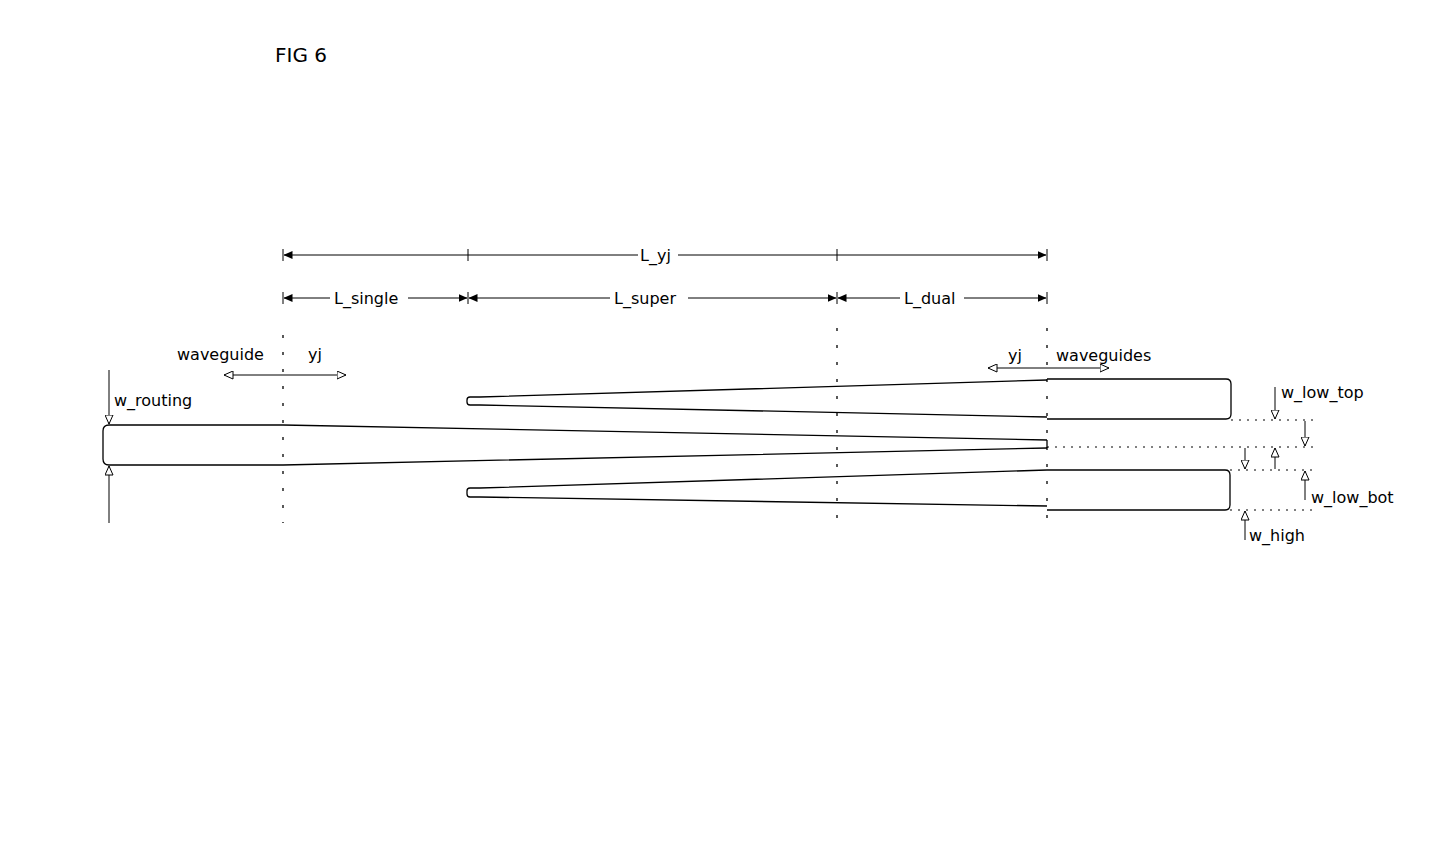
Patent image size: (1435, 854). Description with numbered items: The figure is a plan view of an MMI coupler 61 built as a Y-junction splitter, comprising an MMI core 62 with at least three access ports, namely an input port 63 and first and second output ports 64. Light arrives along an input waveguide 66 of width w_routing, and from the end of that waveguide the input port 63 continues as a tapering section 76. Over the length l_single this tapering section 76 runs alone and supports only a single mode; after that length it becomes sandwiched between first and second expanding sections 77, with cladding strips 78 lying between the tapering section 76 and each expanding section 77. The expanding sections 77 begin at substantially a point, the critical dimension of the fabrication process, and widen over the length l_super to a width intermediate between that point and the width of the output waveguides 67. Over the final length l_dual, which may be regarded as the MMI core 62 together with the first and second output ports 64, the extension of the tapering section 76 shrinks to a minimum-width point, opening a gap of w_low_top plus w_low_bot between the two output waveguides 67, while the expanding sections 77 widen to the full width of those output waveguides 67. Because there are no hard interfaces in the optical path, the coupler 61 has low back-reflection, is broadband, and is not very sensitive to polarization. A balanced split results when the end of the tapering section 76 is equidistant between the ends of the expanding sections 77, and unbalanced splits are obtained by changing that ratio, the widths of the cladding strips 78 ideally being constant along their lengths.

The MMI coupler 61 is at (607, 152).
The MMI core 62 is at (878, 579).
The input port 63 is at (402, 494).
The first and second output ports 64 is at (957, 364).
The input waveguide 66 is at (160, 453).
The output waveguides 67 is at (1205, 398).
The tapering section 76 is at (372, 453).
The first and second expanding sections 77 is at (668, 395).
The cladding strips 78 is at (490, 417).